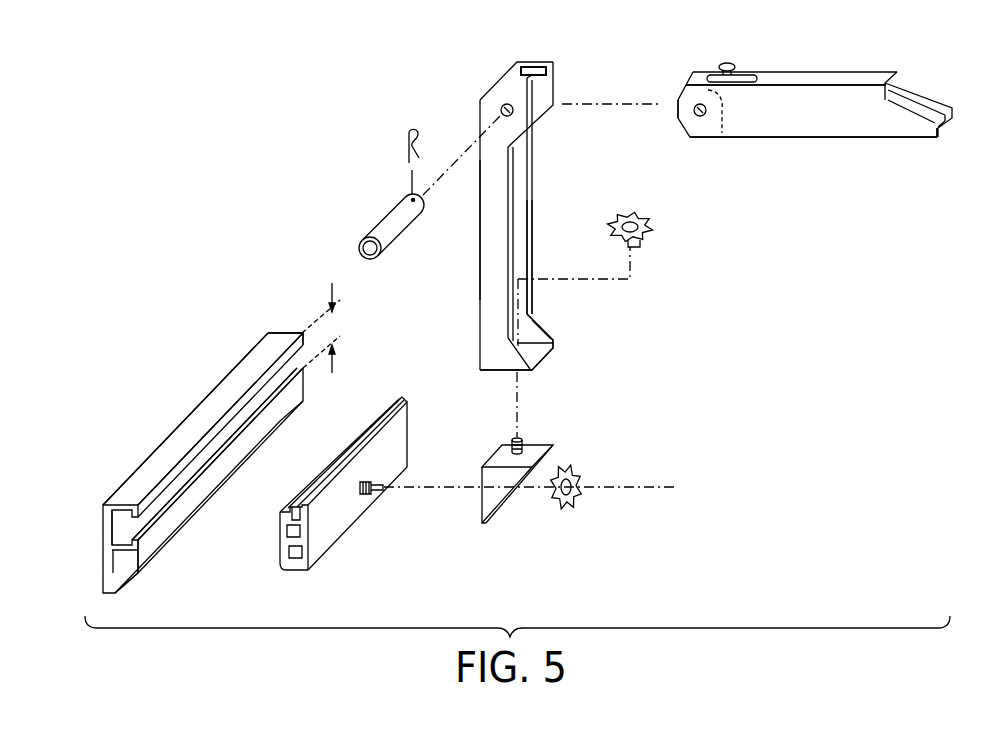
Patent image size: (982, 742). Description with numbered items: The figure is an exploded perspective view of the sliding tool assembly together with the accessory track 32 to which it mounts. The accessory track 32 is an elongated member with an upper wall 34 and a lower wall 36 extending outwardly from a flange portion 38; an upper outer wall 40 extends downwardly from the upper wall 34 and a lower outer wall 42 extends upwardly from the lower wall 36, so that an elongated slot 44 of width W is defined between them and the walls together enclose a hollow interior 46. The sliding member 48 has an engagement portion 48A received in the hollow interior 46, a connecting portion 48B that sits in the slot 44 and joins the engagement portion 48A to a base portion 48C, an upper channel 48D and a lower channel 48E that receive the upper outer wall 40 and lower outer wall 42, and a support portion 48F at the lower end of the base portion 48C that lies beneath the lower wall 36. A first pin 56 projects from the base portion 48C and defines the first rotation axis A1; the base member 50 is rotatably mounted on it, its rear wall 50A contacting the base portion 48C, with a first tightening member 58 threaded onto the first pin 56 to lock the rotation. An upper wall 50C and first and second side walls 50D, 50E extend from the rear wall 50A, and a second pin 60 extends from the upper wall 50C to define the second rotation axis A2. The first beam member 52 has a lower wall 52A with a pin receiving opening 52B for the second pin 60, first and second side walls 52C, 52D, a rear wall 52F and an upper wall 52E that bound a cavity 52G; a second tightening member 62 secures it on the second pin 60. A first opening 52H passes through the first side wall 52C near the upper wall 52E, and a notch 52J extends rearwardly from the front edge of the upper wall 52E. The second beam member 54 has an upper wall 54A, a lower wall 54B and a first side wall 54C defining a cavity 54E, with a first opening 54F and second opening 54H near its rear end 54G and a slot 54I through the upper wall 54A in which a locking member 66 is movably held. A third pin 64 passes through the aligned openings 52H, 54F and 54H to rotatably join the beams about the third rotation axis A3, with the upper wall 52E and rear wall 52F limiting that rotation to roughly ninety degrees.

The accessory track 32 is at (172, 428).
The upper wall 34 is at (223, 397).
The lower wall 36 is at (128, 562).
The flange portion 38 is at (120, 578).
The upper outer wall 40 is at (300, 340).
The lower outer wall 42 is at (157, 525).
The elongated slot 44 is at (288, 368).
The hollow interior 46 is at (118, 525).
The sliding member 48 is at (342, 527).
The engagement portion 48A is at (287, 528).
The connecting portion 48B is at (300, 527).
The base portion 48C is at (397, 437).
The upper channel 48D is at (292, 507).
The lower channel 48E is at (288, 550).
The support portion 48F is at (293, 571).
The base member 50 is at (483, 528).
The rear wall 50A is at (482, 470).
The upper wall 50C is at (535, 455).
The first side wall 50D is at (495, 492).
The second side wall 50E is at (518, 495).
The first beam member 52 is at (480, 301).
The lower wall 52A is at (535, 343).
The pin receiving opening 52B is at (515, 353).
The first side wall 52C is at (493, 243).
The second side wall 52D is at (518, 193).
The upper wall 52E is at (508, 78).
The rear wall 52F is at (480, 110).
The cavity 52G is at (521, 244).
The first opening 52H is at (512, 116).
The notch 52J is at (534, 67).
The second beam member 54 is at (832, 138).
The upper wall 54A is at (830, 78).
The lower wall 54B is at (778, 138).
The first side wall 54C is at (893, 125).
The cavity 54E is at (917, 105).
The first opening 54F is at (690, 120).
The rear end 54G is at (680, 107).
The second opening 54H is at (723, 133).
The slot 54I is at (745, 77).
The first pin 56 is at (368, 494).
The first tightening member 58 is at (577, 507).
The second pin 60 is at (511, 441).
The second tightening member 62 is at (650, 222).
The third pin 64 is at (392, 214).
The locking member 66 is at (722, 63).
The first rotation axis A1 is at (650, 487).
The second rotation axis A2 is at (520, 385).
The third rotation axis A3 is at (557, 63).
The width W is at (340, 330).